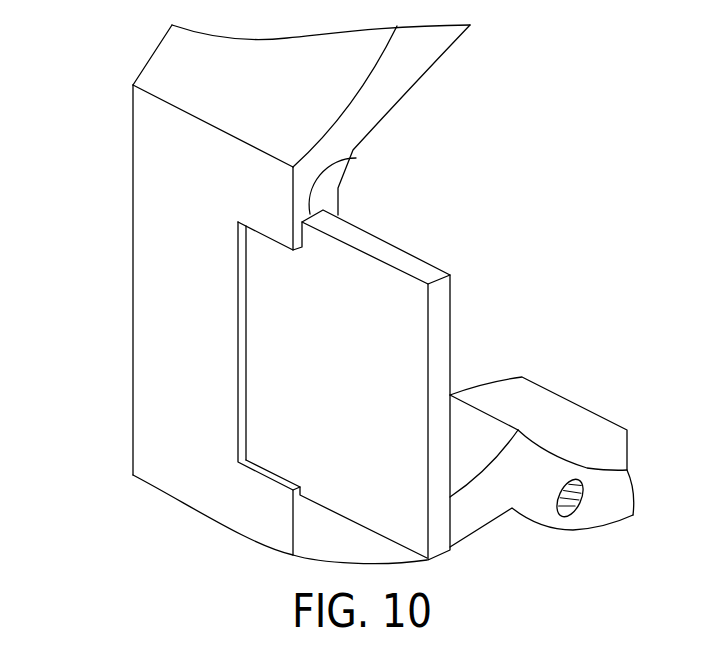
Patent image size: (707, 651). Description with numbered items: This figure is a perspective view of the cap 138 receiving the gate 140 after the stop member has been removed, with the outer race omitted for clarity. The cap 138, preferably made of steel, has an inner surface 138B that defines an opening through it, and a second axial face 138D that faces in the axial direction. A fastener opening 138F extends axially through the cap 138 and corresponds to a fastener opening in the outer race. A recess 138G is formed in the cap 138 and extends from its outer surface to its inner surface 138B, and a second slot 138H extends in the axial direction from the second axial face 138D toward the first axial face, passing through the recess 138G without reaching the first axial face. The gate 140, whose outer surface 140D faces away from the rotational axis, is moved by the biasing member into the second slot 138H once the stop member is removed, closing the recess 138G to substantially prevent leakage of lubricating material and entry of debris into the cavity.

The cap 138 is at (124, 173).
The second axial face 138D is at (390, 70).
The second slot 138H is at (352, 157).
The recess 138G is at (237, 342).
The inner surface 138B is at (553, 417).
The fastener opening 138F is at (583, 500).
The gate 140 is at (450, 313).
The outer surface 140D is at (298, 402).